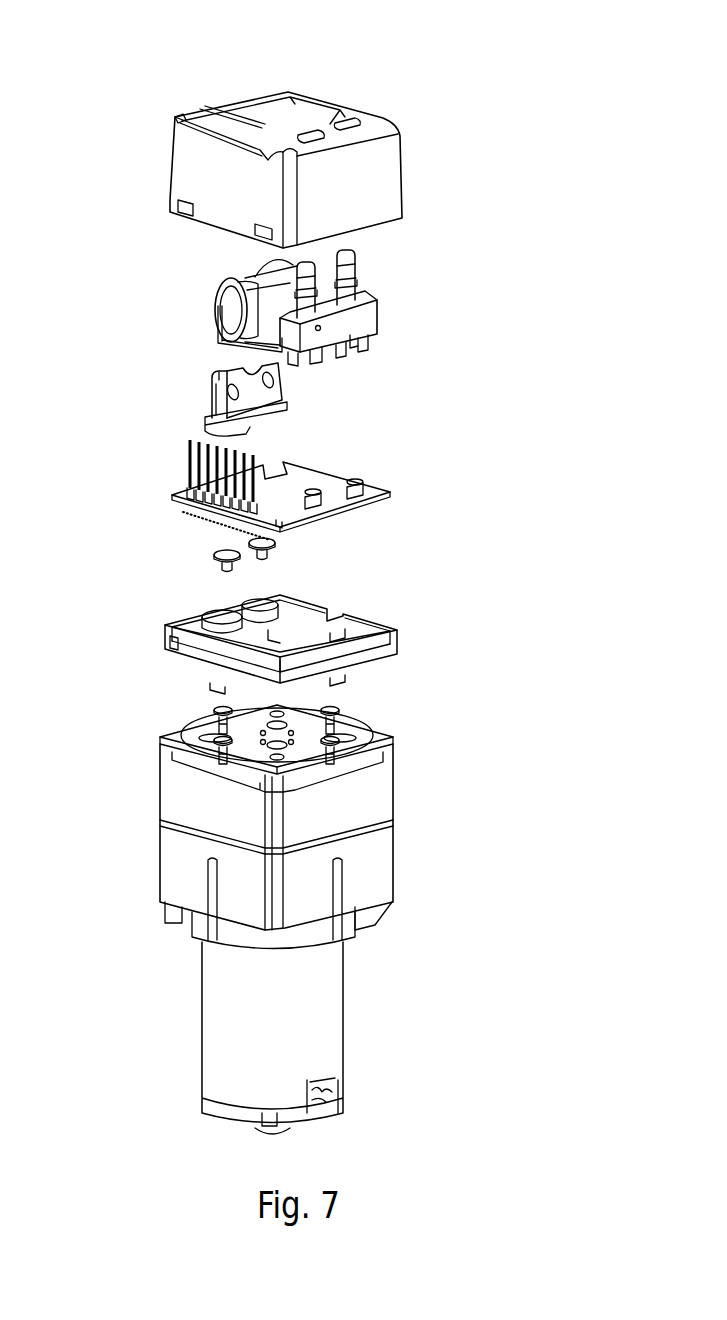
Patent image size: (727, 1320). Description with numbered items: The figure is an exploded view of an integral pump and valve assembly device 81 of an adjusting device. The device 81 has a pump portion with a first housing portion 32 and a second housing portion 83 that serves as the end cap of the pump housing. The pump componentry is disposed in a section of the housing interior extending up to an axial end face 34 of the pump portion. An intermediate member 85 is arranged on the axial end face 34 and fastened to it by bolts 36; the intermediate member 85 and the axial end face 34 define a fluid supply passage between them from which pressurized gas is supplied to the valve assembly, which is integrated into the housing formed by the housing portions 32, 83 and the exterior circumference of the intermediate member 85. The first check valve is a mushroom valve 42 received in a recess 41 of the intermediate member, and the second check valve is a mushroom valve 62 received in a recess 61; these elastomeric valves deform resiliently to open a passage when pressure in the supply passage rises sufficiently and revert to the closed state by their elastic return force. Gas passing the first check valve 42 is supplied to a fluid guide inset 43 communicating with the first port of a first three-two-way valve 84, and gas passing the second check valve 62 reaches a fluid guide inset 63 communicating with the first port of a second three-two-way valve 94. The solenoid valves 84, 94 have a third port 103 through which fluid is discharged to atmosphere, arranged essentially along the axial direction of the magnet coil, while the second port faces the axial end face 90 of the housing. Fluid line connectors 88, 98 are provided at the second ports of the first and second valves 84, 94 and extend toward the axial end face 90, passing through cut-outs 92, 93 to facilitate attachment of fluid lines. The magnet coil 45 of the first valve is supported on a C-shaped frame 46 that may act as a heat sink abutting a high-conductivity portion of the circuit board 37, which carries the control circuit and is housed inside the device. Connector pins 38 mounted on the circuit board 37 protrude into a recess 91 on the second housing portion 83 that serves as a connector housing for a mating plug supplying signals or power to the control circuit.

The device 81 is at (530, 52).
The second housing portion 83 is at (403, 217).
The axial end face 90 is at (320, 99).
The recess 91 is at (175, 117).
The cut-out 92 is at (322, 135).
The cut-out 93 is at (358, 122).
The first 3/2-way valve 84 is at (208, 300).
The magnet coil 45 is at (228, 310).
The C-shaped frame 46 is at (225, 338).
The second 3/2-way valve 94 is at (380, 302).
The third port 103 is at (355, 315).
The fluid line connector 88 is at (302, 263).
The fluid line connector 98 is at (353, 262).
The fluid guide inset 43 is at (210, 402).
The fluid guide inset 63 is at (278, 393).
The circuit board 37 is at (387, 492).
The connector pins 38 is at (187, 467).
The mushroom valve 62 is at (252, 542).
The mushroom valve 42 is at (215, 552).
The recess 61 is at (313, 605).
The recess 41 is at (203, 622).
The intermediate member 85 is at (158, 647).
The axial end face 34 is at (175, 742).
The bolts 36 is at (340, 712).
The first housing portion 32 is at (152, 843).